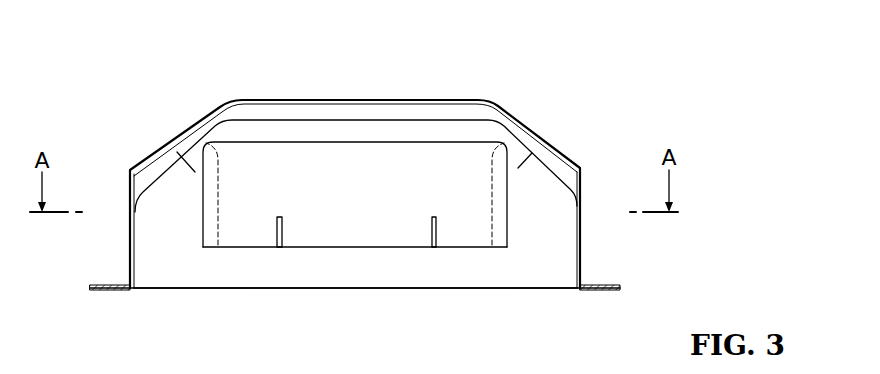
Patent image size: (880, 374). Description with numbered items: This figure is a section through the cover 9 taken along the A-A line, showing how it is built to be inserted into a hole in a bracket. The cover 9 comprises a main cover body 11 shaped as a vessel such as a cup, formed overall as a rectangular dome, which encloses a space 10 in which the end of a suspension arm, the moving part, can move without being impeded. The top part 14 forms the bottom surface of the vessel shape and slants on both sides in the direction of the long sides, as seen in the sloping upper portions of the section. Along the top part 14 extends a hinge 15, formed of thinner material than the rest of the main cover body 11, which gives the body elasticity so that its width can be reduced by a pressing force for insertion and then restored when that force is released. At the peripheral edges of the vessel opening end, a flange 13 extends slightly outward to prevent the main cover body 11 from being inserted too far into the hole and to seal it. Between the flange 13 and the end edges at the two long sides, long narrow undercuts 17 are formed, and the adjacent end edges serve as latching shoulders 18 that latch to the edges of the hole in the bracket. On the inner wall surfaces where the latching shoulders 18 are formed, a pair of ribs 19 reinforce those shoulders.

The cover 9 is at (548, 97).
The space 10 is at (339, 198).
The main cover body 11 is at (122, 249).
The flange 13 is at (106, 292).
The top part 14 is at (378, 120).
The hinge 15 is at (263, 98).
The undercut 17 is at (224, 268).
The latching shoulder 18 is at (250, 249).
The rib 19 is at (284, 228).